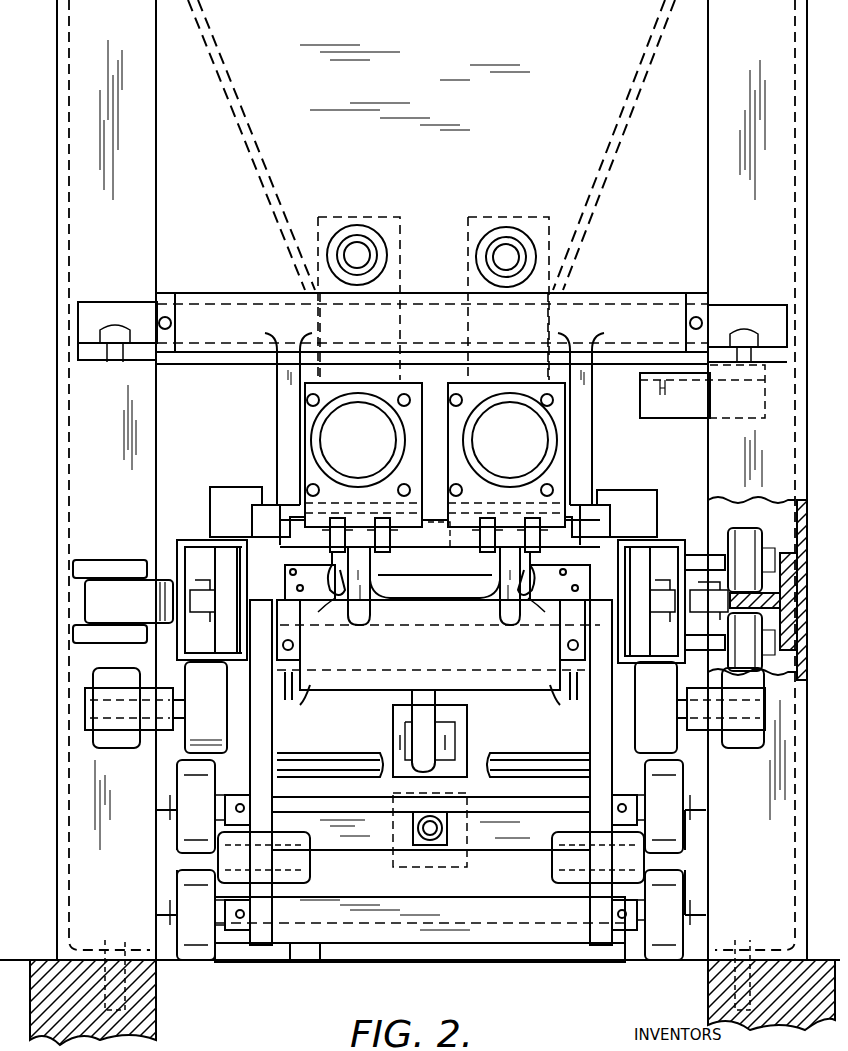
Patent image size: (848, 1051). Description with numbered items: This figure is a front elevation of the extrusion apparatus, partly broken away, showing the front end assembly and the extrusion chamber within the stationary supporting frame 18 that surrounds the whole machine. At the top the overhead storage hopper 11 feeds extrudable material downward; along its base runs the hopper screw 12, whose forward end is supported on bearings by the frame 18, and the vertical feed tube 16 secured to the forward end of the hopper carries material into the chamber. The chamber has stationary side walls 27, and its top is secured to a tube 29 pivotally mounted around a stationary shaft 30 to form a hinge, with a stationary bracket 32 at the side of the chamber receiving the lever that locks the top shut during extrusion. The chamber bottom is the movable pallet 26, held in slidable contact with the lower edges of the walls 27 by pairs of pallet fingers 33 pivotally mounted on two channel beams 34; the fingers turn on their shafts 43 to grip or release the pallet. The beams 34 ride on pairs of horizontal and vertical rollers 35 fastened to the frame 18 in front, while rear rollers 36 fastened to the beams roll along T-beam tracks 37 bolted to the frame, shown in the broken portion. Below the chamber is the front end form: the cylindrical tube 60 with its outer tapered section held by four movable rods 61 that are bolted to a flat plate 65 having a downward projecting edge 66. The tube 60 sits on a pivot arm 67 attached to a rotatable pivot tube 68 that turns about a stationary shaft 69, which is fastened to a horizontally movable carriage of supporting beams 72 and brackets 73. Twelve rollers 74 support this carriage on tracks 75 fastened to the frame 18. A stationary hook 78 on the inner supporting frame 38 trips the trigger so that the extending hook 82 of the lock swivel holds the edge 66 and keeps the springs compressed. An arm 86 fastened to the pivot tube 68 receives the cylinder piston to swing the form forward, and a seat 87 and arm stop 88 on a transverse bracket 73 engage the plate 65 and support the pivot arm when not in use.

The overhead storage hopper 11 is at (610, 108).
The hopper screw 12 is at (514, 212).
The vertical feed tube 16 is at (565, 316).
The stationary supporting frame 18 is at (800, 102).
The movable base or pallet 26 is at (602, 545).
The side walls 27 is at (600, 452).
The tube 29 is at (640, 300).
The stationary shaft 30 is at (748, 312).
The stationary bracket 32 is at (688, 408).
The pallet fingers 33 is at (665, 478).
The channel beams 34 is at (696, 528).
The horizontal and vertical rollers 35 is at (670, 732).
The rollers 36 is at (815, 656).
The tracks 37 is at (797, 612).
The inner supporting frame 38 is at (580, 578).
The shafts 43 is at (660, 568).
The cylindrical tube 60 is at (592, 436).
The movable rods 61 is at (592, 400).
The flat plate 65 is at (306, 472).
The projecting edge 66 is at (410, 525).
The pivot arm 67 is at (492, 632).
The pivot tube 68 is at (355, 690).
The stationary shaft 69 is at (560, 700).
The supporting beams 72 is at (575, 822).
The brackets 73 is at (490, 972).
The rollers 74 is at (648, 985).
The tracks or beams 75 is at (725, 866).
The stationary projecting hook 78 is at (540, 625).
The extending hook 82 is at (468, 575).
The arm 86 is at (438, 715).
The seat 87 is at (280, 763).
The arm stop 88 is at (518, 756).